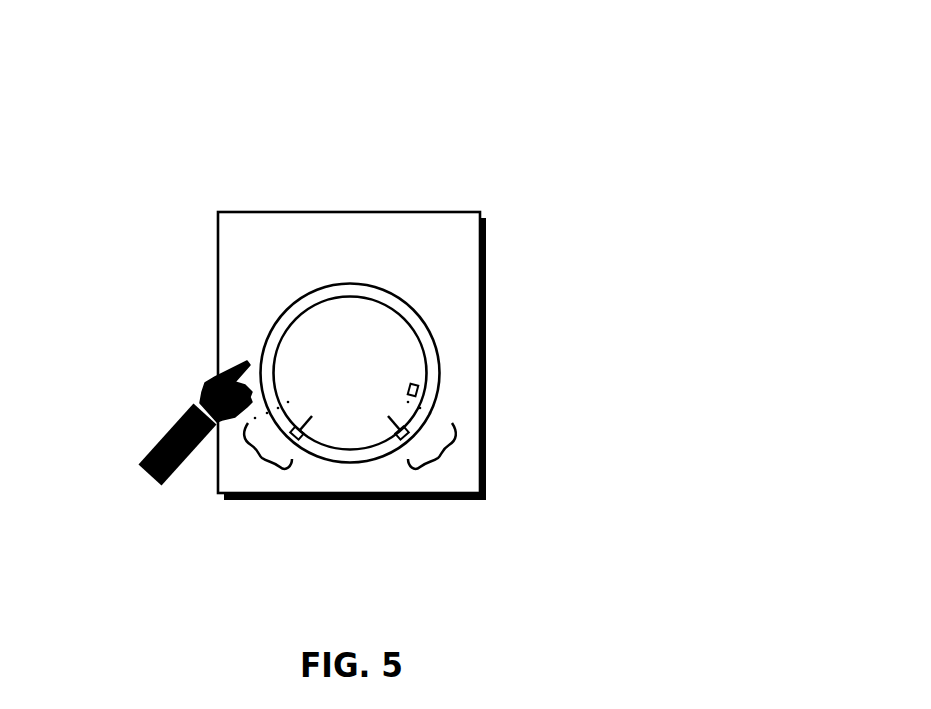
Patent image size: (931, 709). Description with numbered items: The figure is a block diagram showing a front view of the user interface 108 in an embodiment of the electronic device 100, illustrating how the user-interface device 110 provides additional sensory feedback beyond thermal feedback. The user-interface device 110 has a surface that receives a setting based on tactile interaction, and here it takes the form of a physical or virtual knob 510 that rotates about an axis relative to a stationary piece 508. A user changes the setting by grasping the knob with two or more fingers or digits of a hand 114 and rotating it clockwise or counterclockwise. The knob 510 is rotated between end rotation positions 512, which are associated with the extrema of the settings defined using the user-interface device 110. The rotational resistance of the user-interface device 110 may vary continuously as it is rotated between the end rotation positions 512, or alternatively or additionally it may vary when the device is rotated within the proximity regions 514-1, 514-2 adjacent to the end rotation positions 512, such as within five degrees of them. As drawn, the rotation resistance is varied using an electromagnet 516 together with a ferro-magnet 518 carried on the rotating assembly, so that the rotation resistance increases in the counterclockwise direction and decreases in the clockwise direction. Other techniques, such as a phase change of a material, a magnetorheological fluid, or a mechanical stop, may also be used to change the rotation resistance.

The electronic device 100 is at (207, 89).
The user interface 108 is at (365, 268).
The user-interface device 110 is at (424, 319).
The hand 114 is at (183, 420).
The stationary piece 508 is at (402, 310).
The knob 510 is at (425, 363).
The end rotation positions 512 is at (298, 447).
The proximity region 514-1 is at (258, 452).
The proximity region 514-2 is at (442, 452).
The electromagnet 516 is at (303, 434).
The ferro-magnet 518 is at (421, 390).